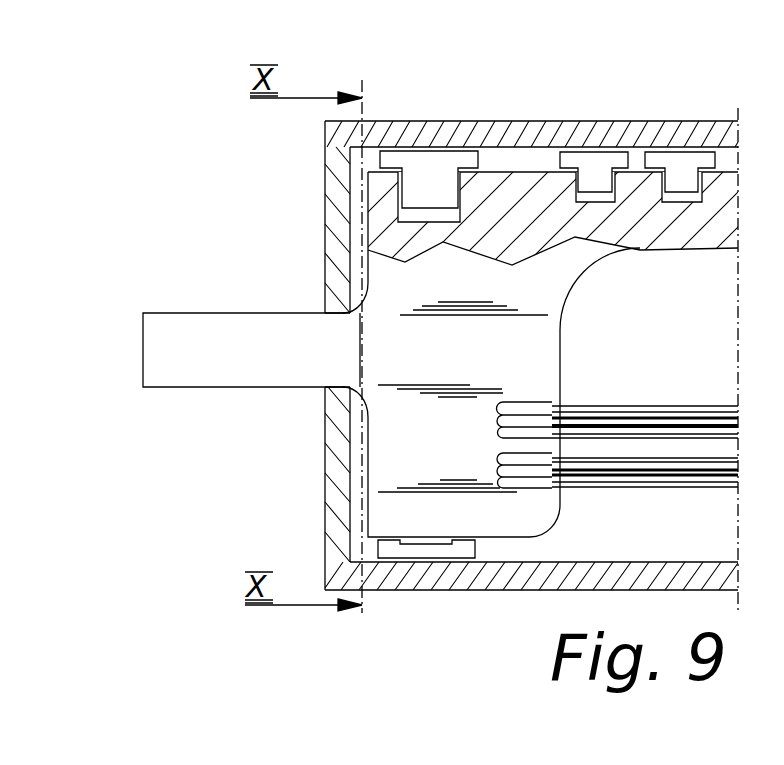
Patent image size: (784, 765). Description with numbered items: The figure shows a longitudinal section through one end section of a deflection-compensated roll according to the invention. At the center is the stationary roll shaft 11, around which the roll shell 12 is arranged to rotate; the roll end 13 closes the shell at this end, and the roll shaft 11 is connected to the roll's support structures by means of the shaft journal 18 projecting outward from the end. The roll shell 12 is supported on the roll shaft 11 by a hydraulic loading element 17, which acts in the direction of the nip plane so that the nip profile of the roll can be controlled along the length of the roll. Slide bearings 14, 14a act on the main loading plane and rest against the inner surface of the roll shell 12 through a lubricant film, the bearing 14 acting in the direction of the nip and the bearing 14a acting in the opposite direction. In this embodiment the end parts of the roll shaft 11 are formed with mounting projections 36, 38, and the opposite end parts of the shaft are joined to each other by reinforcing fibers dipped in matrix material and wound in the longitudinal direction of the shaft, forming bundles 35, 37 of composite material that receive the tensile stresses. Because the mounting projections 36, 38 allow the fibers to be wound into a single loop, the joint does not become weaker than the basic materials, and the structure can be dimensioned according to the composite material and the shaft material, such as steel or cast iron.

The roll shaft 11 is at (553, 333).
The roll shell 12 is at (523, 140).
The roll end 13 is at (330, 207).
The slide bearing 14 is at (425, 162).
The slide bearing 14a is at (420, 555).
The hydraulic loading element 17 is at (677, 158).
The shaft journal 18 is at (222, 372).
The bundle of composite material 35 is at (653, 407).
The mounting projection 36 is at (523, 403).
The bundle of composite material 37 is at (573, 487).
The mounting projection 38 is at (520, 465).